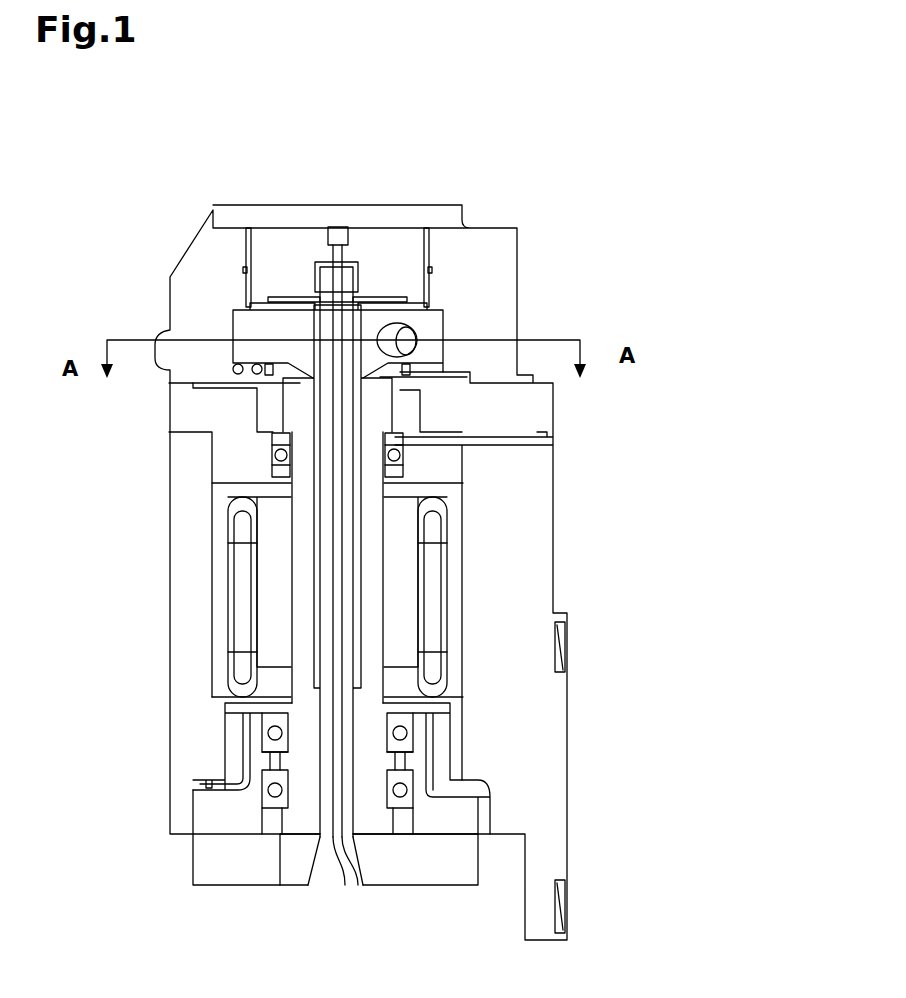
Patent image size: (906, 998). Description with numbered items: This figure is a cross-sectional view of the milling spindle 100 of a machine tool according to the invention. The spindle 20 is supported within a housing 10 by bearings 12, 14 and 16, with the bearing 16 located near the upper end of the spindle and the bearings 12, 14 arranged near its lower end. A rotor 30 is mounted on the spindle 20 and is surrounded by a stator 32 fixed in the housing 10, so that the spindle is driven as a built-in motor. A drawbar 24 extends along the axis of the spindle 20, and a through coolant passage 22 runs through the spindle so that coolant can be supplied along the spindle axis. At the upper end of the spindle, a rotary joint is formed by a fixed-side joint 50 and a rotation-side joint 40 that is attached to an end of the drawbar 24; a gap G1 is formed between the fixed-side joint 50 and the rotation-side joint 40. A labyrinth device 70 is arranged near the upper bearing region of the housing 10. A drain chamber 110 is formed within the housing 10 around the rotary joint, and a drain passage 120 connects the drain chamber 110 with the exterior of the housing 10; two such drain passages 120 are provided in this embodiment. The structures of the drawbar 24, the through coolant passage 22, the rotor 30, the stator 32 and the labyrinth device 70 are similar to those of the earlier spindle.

The housing 10 is at (183, 606).
The bearing 12 is at (262, 797).
The bearing 14 is at (262, 731).
The bearing 16 is at (272, 466).
The spindle 20 is at (293, 882).
The through coolant passage 22 is at (350, 888).
The drawbar 24 is at (347, 840).
The rotor 30 is at (405, 634).
The stator 32 is at (430, 585).
The rotation-side joint 40 is at (362, 290).
The fixed-side joint 50 is at (331, 225).
The labyrinth device 70 is at (233, 368).
The milling spindle 100 is at (732, 474).
The drain chamber 110 is at (253, 325).
The drain passage 120 is at (412, 326).
The gap G1 is at (332, 291).